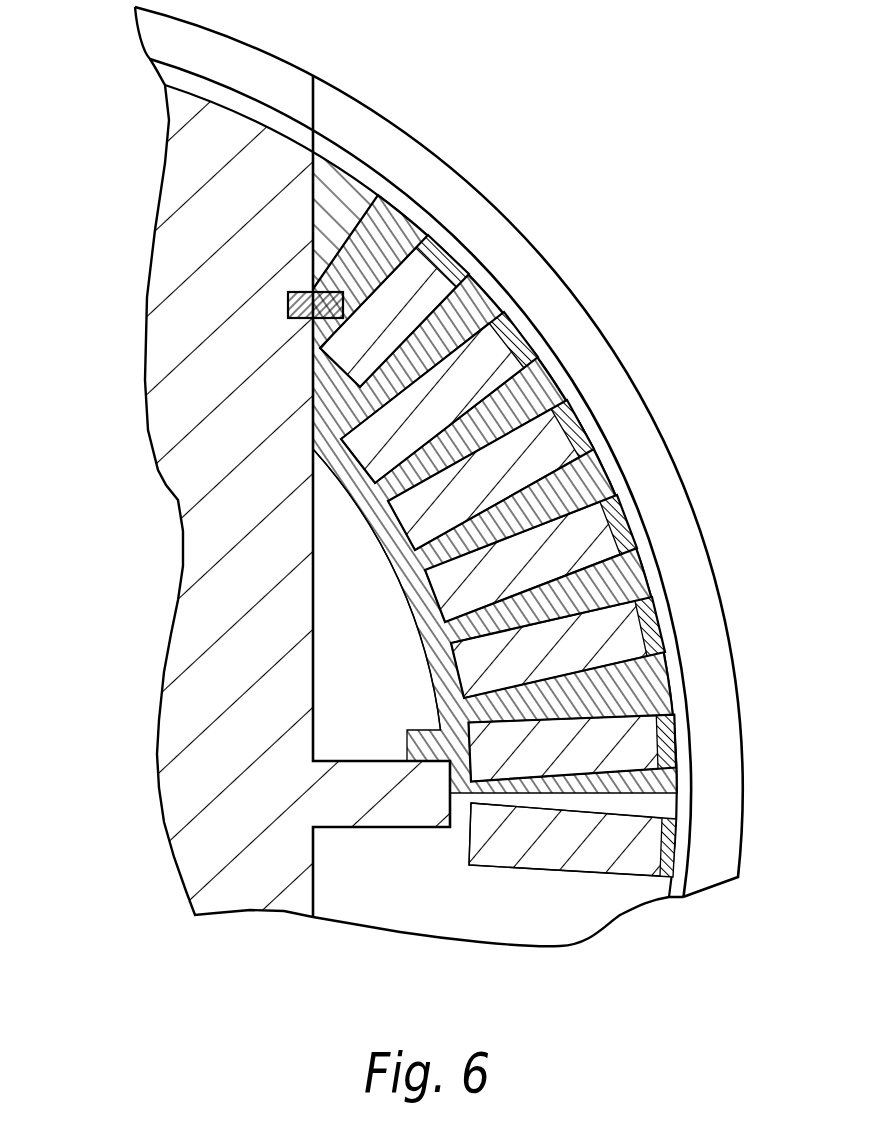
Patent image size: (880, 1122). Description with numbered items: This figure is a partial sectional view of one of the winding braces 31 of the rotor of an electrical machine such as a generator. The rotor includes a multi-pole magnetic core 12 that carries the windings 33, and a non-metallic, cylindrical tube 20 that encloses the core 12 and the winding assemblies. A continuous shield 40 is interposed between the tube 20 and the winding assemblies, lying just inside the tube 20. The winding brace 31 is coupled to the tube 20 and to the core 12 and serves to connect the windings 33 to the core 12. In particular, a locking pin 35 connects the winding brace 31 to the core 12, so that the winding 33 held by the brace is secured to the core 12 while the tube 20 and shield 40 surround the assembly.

The multi-pole magnetic core 12 is at (212, 615).
The non-metallic cylindrical tube 20 is at (685, 598).
The winding brace 31 is at (388, 234).
The winding 33 is at (408, 300).
The locking pin 35 is at (302, 293).
The continuous shield 40 is at (558, 378).